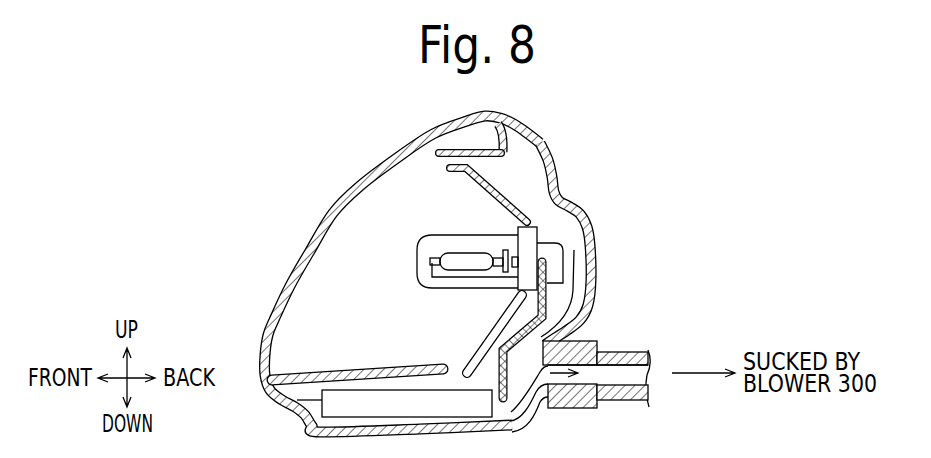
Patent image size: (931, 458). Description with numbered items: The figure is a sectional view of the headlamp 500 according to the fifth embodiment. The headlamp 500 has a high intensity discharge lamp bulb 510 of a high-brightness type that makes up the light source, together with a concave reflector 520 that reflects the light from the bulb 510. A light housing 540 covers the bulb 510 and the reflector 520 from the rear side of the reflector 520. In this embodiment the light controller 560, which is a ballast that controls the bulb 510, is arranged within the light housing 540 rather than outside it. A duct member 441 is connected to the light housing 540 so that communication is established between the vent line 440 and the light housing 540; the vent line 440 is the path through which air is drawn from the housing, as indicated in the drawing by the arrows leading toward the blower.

The headlamp 500 is at (323, 211).
The high intensity discharge lamp bulb 510 is at (437, 233).
The concave reflector 520 is at (486, 175).
The light housing 540 is at (557, 176).
The light controller 560 is at (282, 408).
The vent line 440 is at (625, 373).
The duct member 441 is at (632, 400).